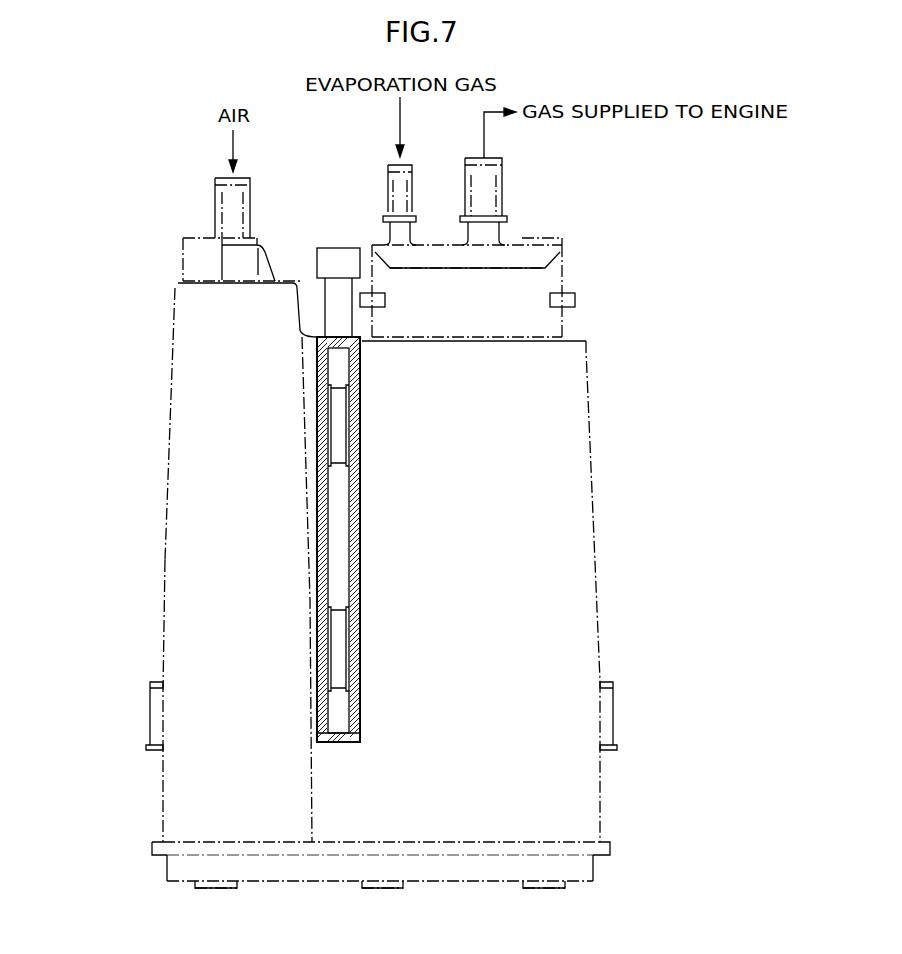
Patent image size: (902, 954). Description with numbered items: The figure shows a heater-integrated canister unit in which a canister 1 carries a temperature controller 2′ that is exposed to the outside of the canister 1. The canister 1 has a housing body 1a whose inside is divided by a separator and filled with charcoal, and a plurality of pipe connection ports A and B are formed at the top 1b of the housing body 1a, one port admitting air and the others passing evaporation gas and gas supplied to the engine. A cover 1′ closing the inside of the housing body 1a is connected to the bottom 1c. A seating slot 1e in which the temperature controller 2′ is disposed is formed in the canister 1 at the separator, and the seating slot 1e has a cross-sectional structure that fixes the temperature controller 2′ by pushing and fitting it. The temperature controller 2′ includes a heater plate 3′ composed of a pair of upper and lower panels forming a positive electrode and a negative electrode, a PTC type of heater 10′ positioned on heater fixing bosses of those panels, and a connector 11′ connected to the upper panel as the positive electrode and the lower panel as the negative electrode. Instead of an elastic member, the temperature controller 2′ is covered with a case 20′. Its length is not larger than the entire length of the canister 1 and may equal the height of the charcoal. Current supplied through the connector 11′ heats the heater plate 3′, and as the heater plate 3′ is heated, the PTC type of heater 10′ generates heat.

The canister 1 is at (86, 333).
The housing body 1a is at (172, 460).
The top 1b is at (175, 285).
The bottom 1c is at (150, 850).
The seating slot 1e is at (330, 827).
The cover 1′ is at (218, 888).
The temperature controller 2′ is at (693, 410).
The heater plate 3′ is at (358, 462).
The PTC type of heater 10′ is at (342, 420).
The connector 11′ is at (337, 248).
The case 20′ is at (340, 742).
The pipe connection port A is at (168, 180).
The pipe connection port B is at (588, 157).